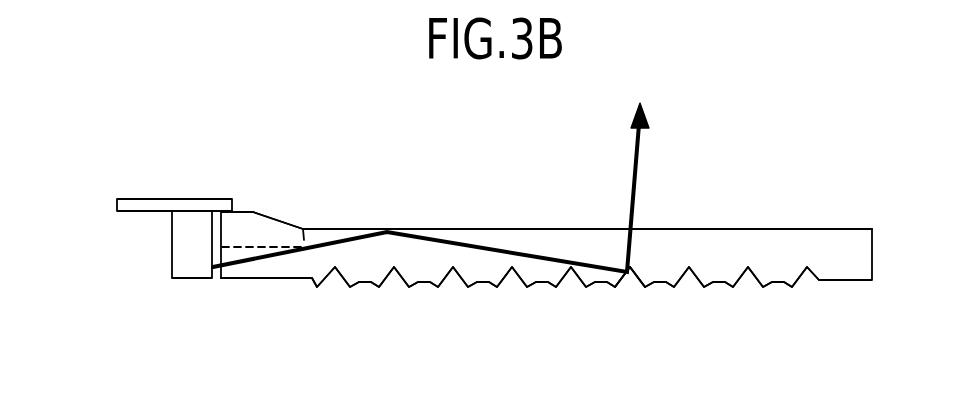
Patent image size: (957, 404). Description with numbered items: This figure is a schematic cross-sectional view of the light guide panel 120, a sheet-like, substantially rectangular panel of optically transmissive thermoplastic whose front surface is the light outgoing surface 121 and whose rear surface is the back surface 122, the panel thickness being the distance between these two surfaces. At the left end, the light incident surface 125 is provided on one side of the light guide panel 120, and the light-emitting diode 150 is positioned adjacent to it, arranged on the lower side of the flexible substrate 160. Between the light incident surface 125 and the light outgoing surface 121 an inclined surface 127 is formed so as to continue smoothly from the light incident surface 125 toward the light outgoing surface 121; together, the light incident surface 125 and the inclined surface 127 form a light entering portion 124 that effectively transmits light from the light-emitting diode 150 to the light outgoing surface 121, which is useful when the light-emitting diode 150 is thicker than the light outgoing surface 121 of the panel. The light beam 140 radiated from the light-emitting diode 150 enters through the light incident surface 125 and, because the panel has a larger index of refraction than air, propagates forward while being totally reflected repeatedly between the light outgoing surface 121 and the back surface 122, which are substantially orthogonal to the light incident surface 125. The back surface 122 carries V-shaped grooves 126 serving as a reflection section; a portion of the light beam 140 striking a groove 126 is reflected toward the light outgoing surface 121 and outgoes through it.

The light guide panel 120 is at (475, 263).
The light outgoing surface 121 is at (725, 229).
The back surface 122 is at (717, 281).
The light entering portion 124 is at (244, 272).
The light incident surface 125 is at (212, 241).
The V-shaped groove 126 is at (633, 297).
The inclined surface 127 is at (272, 222).
The light beam 140 is at (413, 237).
The light-emitting diode 150 is at (185, 264).
The flexible substrate 160 is at (182, 199).